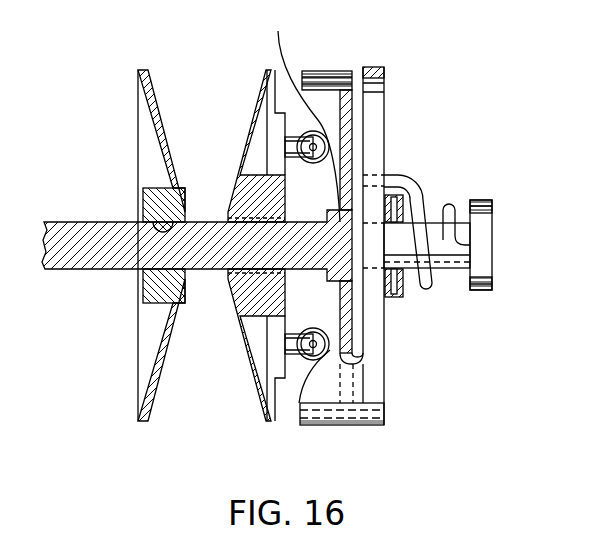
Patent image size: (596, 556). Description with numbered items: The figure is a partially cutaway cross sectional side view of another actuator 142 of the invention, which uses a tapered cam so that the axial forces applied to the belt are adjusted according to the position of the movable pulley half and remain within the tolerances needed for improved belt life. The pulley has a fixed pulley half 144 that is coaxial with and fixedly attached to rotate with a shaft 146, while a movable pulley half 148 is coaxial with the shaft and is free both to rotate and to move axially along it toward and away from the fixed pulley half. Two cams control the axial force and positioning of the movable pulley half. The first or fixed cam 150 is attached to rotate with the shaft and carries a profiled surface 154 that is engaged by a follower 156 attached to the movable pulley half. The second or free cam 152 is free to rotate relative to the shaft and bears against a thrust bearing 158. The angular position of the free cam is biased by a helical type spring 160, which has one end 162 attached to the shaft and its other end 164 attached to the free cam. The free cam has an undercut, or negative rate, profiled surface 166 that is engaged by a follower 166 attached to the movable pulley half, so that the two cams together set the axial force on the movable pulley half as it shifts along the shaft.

The actuator 142 is at (440, 57).
The fixed pulley half 144 is at (146, 424).
The shaft 146 is at (71, 270).
The movable pulley half 148 is at (267, 72).
The fixed cam 150 is at (333, 73).
The free cam 152 is at (385, 425).
The profiled surface 154 is at (297, 114).
The follower 156 is at (322, 145).
The thrust bearing 158 is at (403, 295).
The helical type spring 160 is at (418, 188).
The one end of the spring 162 is at (470, 243).
The other end of the spring 164 is at (373, 180).
The negative rate profiled surface and follower 166 is at (328, 340).